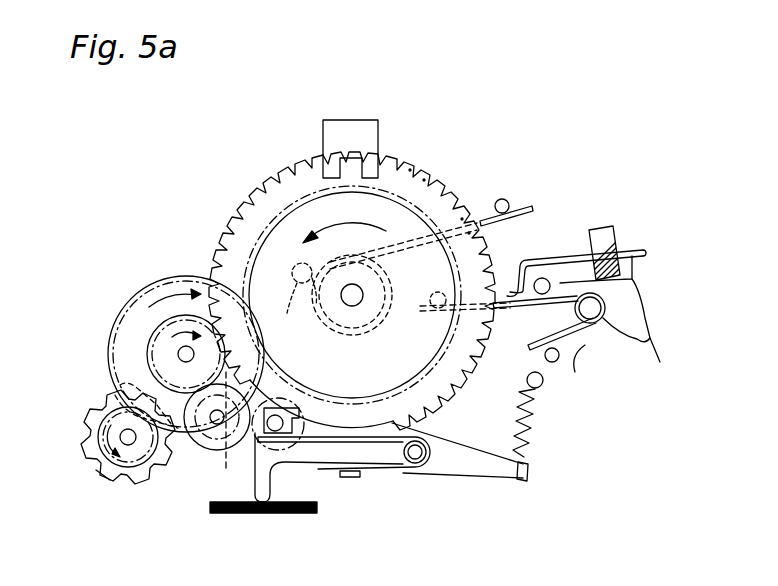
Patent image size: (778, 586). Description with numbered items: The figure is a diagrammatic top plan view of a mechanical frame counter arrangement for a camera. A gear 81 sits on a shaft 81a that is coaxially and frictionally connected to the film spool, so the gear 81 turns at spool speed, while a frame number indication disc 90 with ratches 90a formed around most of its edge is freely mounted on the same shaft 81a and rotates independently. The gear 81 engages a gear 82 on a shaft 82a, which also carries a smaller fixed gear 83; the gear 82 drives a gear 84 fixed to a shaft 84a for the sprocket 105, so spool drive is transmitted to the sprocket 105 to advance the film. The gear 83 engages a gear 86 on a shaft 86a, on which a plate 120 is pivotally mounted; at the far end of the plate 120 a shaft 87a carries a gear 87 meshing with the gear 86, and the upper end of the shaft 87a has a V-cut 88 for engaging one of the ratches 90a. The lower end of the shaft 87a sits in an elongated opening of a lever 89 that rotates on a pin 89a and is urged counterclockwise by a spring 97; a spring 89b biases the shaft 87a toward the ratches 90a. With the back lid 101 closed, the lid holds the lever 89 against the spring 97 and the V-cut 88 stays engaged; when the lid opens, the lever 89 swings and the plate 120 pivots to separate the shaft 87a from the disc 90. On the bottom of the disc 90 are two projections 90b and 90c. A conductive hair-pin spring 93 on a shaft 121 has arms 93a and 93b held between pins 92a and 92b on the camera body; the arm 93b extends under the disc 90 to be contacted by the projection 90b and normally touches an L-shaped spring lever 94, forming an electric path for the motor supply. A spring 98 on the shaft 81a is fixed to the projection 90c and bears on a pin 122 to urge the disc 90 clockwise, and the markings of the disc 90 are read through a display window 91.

The gear 81 is at (352, 396).
The shaft 81a is at (348, 306).
The gear 82 is at (165, 280).
The shaft 82a is at (178, 354).
The gear 83 is at (150, 332).
The gear 84 is at (88, 436).
The shaft 84a is at (128, 452).
The gear 86 is at (208, 452).
The shaft 86a is at (185, 440).
The gear 87 is at (272, 478).
The shaft 87a is at (302, 425).
The V-cut 88 is at (318, 470).
The lever 89 is at (480, 468).
The pin 89a is at (420, 466).
The spring 89b is at (400, 465).
The frame number indication disc 90 is at (273, 190).
The ratches 90a is at (223, 232).
The projection 90b is at (434, 296).
The projection 90c is at (292, 302).
The display window 91 is at (352, 157).
The pin 92a is at (633, 280).
The pin 92b is at (556, 364).
The hair-pin spring 93 is at (599, 355).
The arm 93a is at (585, 360).
The arm 93b is at (513, 310).
The L-shaped spring lever 94 is at (545, 266).
The spring 97 is at (543, 437).
The spring 98 is at (572, 182).
The back lid 101 is at (278, 515).
The sprocket 105 is at (103, 472).
The plate 120 is at (233, 434).
The shaft 121 is at (650, 338).
The pin 122 is at (502, 198).